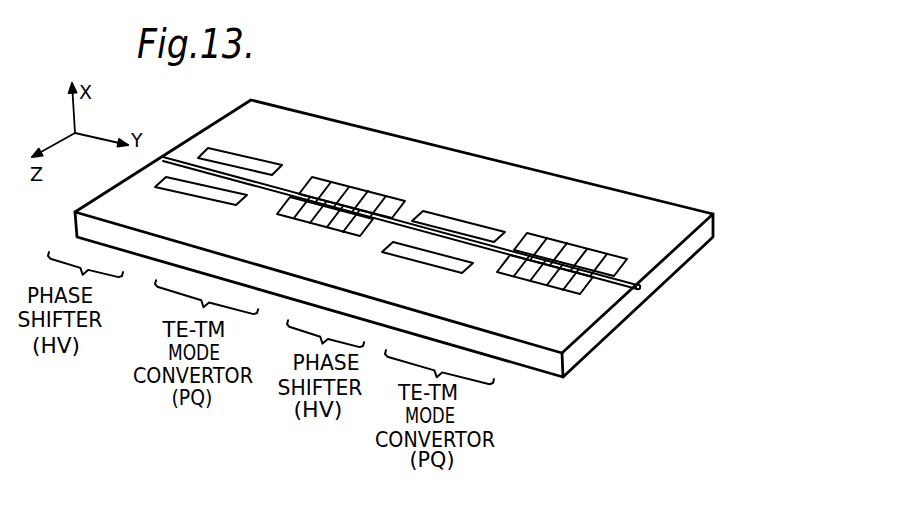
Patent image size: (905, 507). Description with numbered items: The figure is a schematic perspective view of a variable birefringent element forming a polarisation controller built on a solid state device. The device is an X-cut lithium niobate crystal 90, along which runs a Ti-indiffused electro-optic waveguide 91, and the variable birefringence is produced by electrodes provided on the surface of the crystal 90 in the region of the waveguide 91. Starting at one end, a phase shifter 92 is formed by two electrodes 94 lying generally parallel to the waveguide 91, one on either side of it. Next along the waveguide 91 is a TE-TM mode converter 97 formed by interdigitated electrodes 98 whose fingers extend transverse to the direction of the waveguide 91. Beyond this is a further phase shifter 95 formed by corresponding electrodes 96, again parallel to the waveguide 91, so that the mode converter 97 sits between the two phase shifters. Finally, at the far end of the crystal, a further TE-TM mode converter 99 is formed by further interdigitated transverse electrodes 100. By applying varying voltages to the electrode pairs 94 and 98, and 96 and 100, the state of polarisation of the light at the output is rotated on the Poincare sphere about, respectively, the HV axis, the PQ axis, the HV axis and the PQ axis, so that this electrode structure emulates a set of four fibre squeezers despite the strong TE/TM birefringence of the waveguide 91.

The X-cut lithium niobate crystal 90 is at (100, 211).
The Ti-indiffused waveguide 91 is at (164, 157).
The phase shifter 92 is at (276, 116).
The electrodes 94 is at (257, 162).
The further phase shifter 95 is at (497, 183).
The electrodes 96 is at (447, 212).
The TE-TM mode converter 97 is at (393, 160).
The interdigitated electrodes 98 is at (318, 178).
The further TE-TM mode converter 99 is at (612, 223).
The further interdigitated transverse electrodes 100 is at (532, 233).